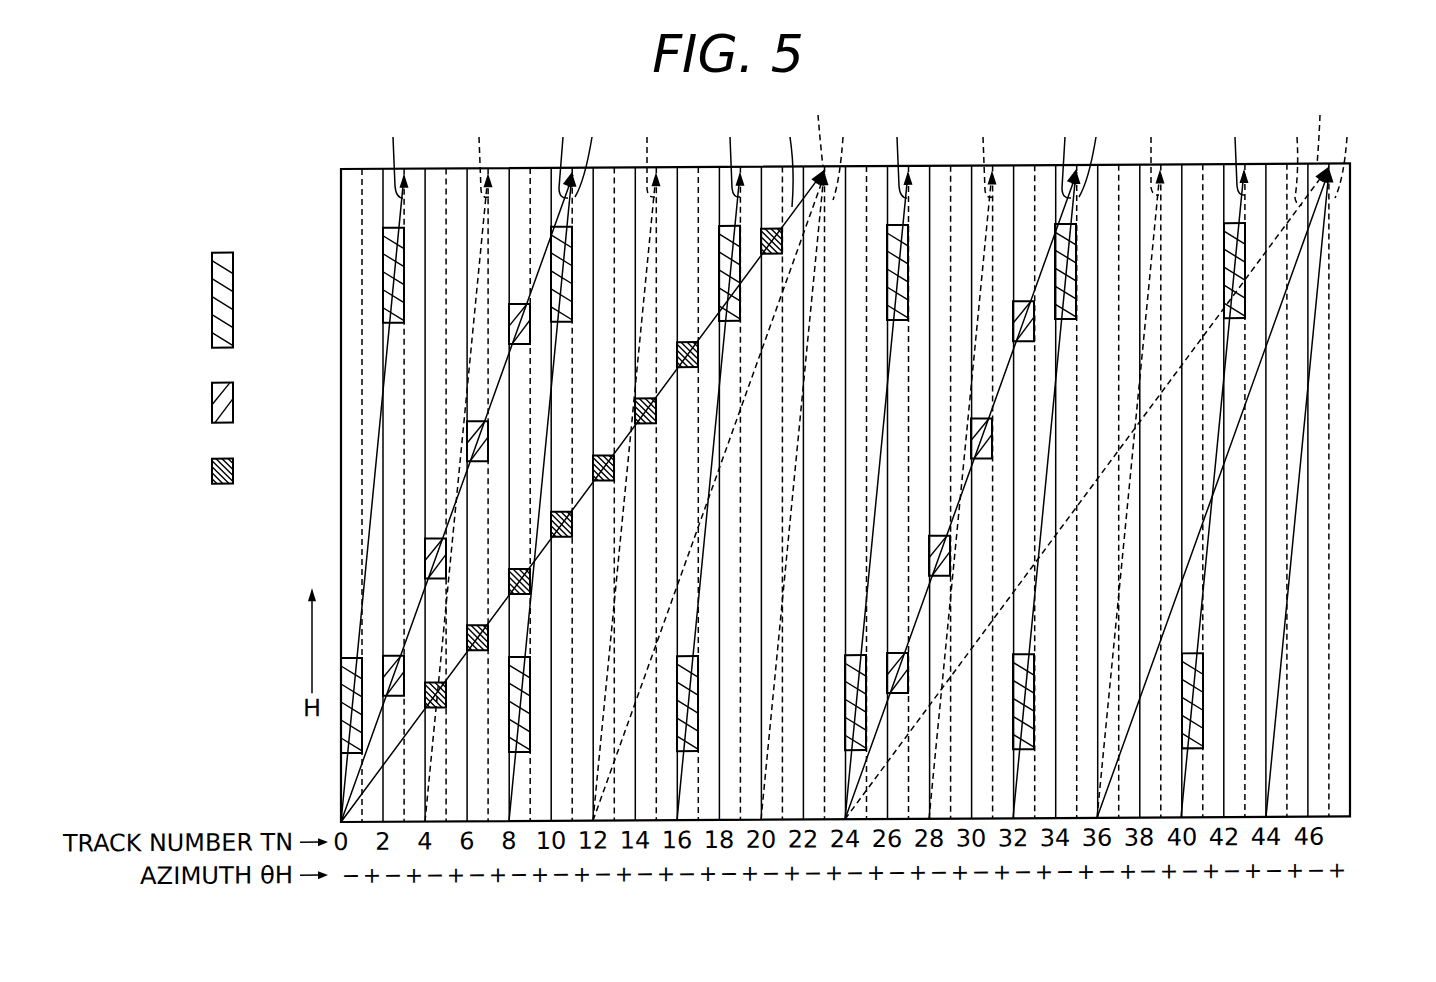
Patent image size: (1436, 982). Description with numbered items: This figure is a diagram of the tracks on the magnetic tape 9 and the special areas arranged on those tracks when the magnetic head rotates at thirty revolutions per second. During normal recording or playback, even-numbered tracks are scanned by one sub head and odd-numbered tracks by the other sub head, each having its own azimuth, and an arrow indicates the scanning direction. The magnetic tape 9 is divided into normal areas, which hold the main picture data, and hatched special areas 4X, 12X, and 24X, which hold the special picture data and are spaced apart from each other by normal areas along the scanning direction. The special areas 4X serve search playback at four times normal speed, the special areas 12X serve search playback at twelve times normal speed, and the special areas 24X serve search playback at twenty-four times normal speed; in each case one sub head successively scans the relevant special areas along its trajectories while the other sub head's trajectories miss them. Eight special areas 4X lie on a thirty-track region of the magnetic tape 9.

The magnetic tape 9 is at (1368, 320).
The special areas 4X is at (212, 293).
The special areas 12X is at (212, 404).
The special areas 24X is at (212, 471).